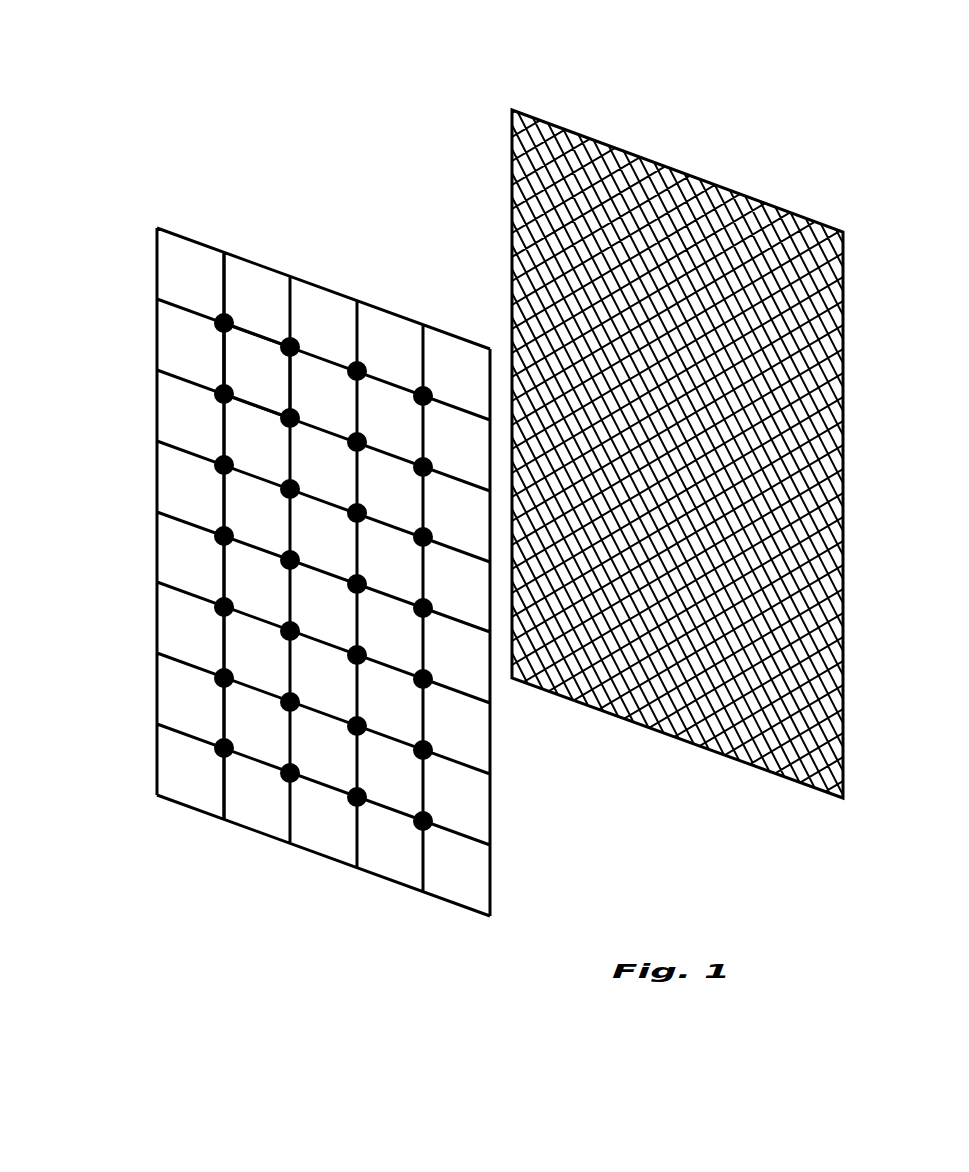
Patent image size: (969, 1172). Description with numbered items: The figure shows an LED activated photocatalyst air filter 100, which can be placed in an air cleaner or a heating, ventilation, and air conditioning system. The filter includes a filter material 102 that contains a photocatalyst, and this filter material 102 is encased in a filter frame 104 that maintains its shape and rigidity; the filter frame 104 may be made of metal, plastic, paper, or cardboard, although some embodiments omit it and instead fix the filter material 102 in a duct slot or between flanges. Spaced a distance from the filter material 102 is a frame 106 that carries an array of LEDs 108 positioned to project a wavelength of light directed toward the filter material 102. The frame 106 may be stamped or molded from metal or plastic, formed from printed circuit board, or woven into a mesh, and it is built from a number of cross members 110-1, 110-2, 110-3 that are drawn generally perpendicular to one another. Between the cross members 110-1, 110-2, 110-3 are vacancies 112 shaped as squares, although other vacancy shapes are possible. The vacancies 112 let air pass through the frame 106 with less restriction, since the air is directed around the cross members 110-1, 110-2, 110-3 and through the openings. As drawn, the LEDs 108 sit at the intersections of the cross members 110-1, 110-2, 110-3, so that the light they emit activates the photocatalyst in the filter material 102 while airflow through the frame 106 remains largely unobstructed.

The LED activated photocatalyst air filter 100 is at (176, 74).
The filter material 102 is at (538, 183).
The filter frame 104 is at (747, 161).
The frame 106 is at (116, 221).
The LEDs 108 is at (216, 330).
The cross member 110-1 is at (157, 412).
The cross member 110-2 is at (223, 430).
The cross member 110-3 is at (190, 453).
The vacancies 112 is at (255, 310).